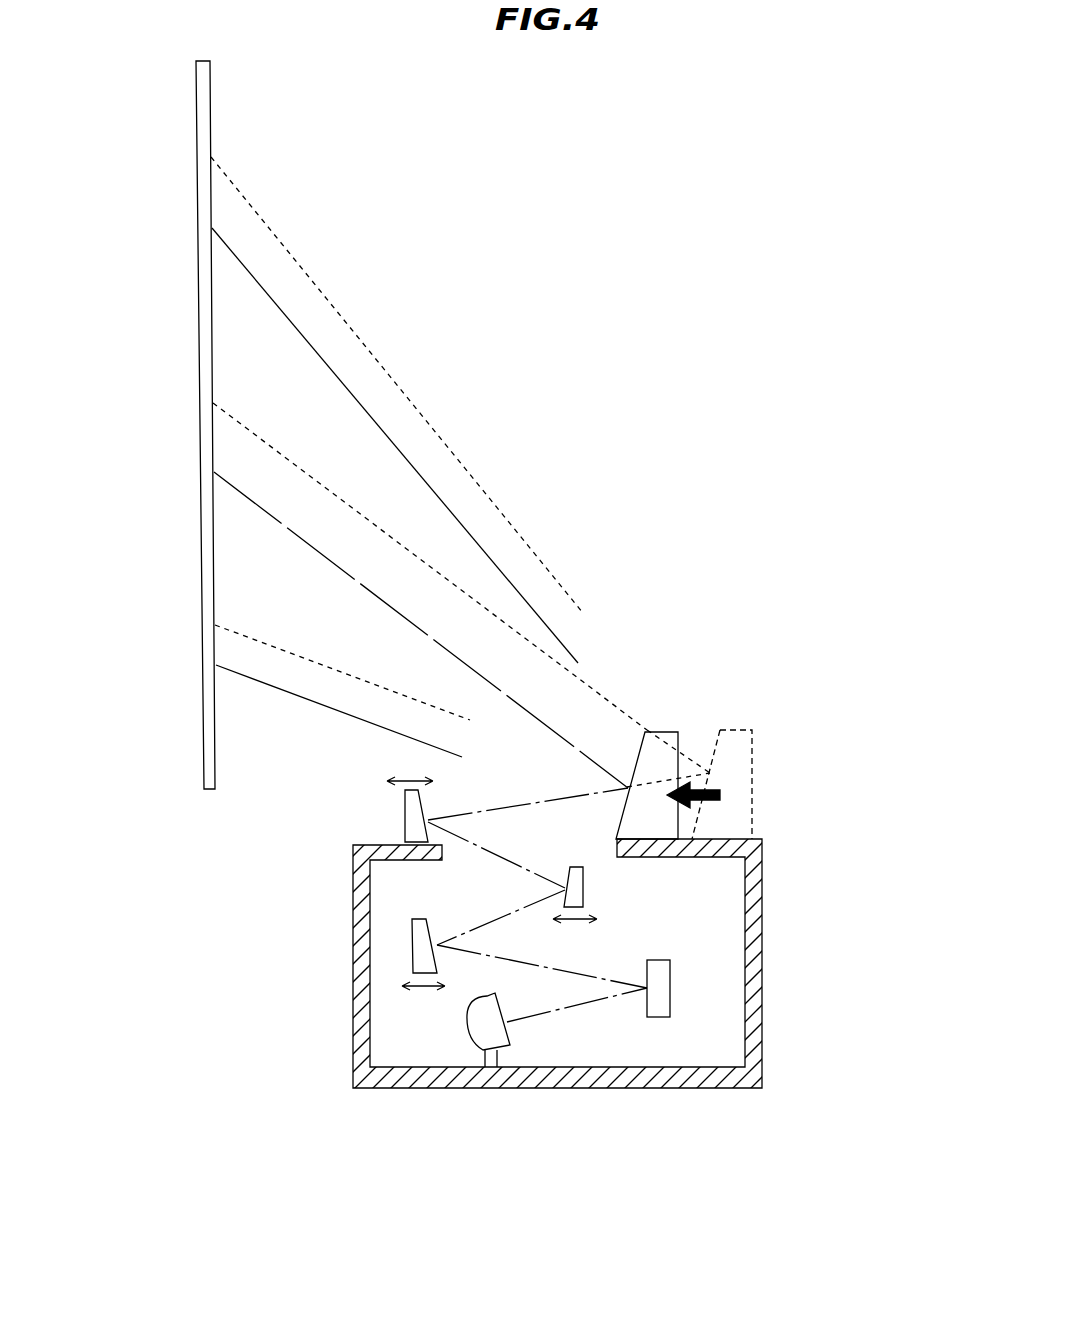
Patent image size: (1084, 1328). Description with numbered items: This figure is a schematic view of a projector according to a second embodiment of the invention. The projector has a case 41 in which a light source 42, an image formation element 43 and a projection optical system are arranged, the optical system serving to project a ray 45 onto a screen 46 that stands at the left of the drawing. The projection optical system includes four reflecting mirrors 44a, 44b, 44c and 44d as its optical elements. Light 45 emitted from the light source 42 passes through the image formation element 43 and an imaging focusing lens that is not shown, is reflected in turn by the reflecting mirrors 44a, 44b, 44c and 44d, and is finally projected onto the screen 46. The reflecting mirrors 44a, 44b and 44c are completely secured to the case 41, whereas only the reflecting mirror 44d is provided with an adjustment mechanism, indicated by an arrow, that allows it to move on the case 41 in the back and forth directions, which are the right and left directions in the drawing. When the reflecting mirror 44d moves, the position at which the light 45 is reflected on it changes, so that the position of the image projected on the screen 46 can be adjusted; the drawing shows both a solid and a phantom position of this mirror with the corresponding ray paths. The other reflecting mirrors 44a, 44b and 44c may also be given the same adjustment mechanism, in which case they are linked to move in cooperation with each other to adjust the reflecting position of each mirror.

The case 41 is at (762, 1015).
The light source 42 is at (468, 1050).
The image formation element 43 is at (657, 1017).
The reflecting mirror 44a is at (412, 938).
The reflecting mirror 44b is at (563, 888).
The reflecting mirror 44c is at (405, 803).
The reflecting mirror 44d is at (665, 730).
The ray 45 is at (550, 1013).
The screen 46 is at (211, 94).